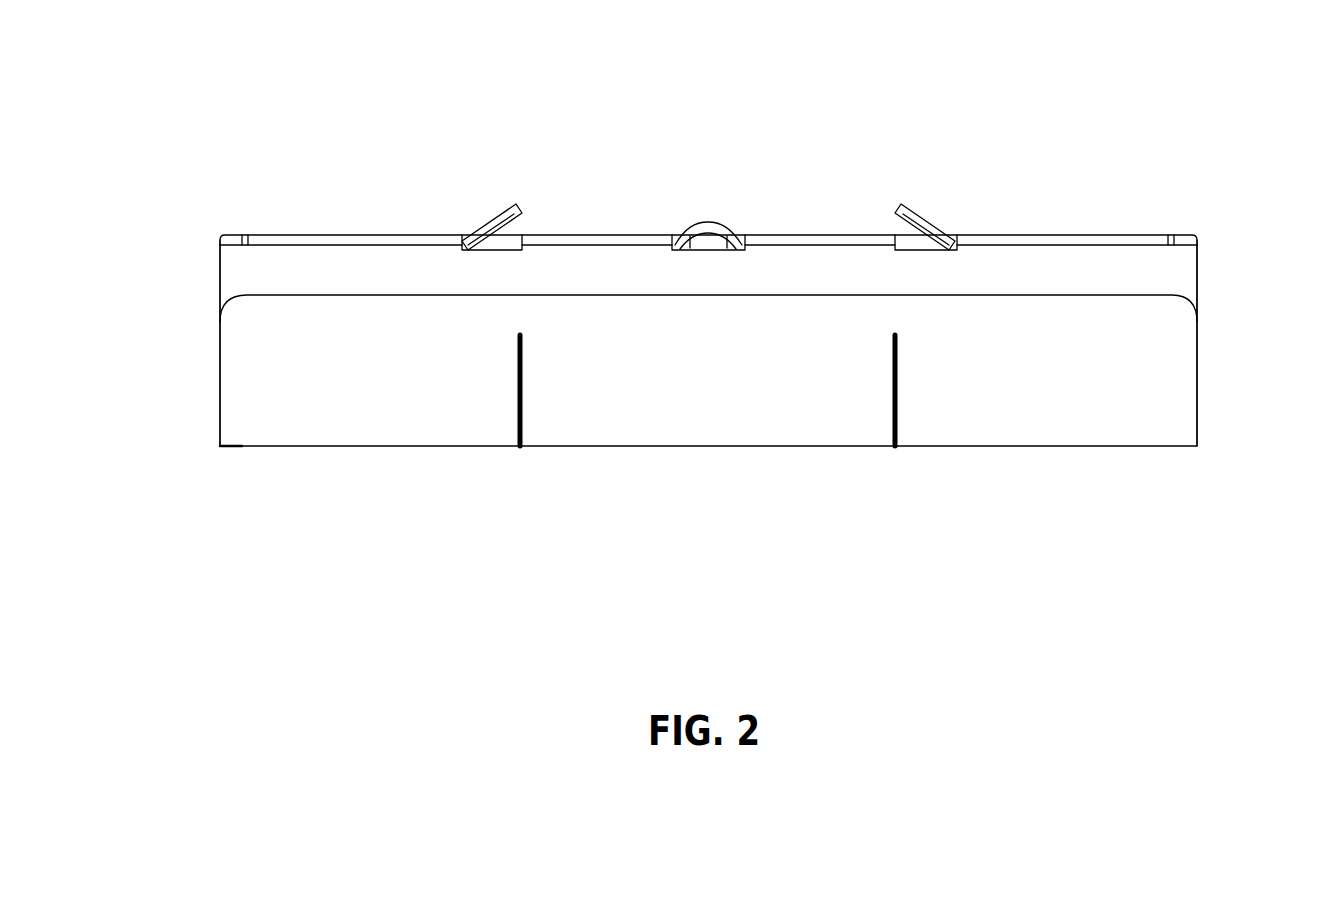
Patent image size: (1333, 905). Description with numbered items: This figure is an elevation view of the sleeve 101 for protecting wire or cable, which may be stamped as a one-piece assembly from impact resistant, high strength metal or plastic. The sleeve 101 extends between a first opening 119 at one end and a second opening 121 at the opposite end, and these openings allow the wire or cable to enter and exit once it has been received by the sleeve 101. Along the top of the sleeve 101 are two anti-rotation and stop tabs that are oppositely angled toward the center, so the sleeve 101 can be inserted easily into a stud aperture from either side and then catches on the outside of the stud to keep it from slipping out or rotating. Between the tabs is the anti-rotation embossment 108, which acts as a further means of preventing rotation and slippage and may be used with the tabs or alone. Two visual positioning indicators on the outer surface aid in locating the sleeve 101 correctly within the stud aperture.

The sleeve 101 is at (740, 373).
The anti-rotation embossment 108 is at (715, 232).
The first opening 119 is at (213, 375).
The second opening 121 is at (1202, 394).